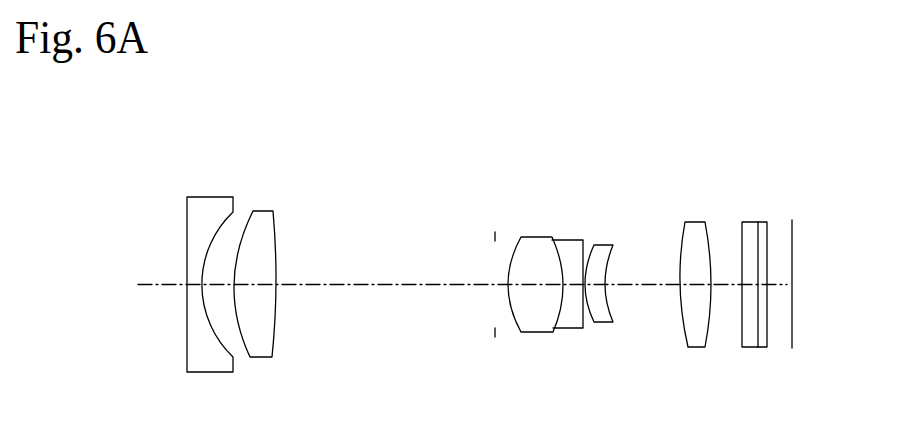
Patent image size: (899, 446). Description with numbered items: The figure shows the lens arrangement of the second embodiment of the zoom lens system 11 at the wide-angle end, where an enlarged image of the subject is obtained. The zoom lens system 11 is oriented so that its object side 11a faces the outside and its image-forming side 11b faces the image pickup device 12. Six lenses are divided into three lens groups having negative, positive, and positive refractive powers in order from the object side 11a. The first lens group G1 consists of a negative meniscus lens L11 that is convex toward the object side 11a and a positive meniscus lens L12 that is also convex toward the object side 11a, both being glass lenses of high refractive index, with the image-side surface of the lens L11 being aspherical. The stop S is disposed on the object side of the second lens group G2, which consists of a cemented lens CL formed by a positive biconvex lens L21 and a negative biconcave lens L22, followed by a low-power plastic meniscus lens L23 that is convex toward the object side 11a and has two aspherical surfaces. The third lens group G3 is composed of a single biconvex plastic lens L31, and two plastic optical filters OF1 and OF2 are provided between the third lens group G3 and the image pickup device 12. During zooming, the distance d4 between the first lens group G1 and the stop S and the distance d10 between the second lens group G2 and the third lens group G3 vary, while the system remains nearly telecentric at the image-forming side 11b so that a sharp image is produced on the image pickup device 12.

The zoom lens system 11 is at (663, 124).
The object side 11a is at (112, 229).
The image-forming side 11b is at (725, 219).
The image pickup device 12 is at (792, 255).
The first lens group G1 is at (240, 287).
The second lens group G2 is at (581, 285).
The third lens group G3 is at (703, 289).
The negative meniscus lens L11 is at (215, 205).
The positive meniscus lens L12 is at (257, 218).
The positive biconvex lens L21 is at (535, 240).
The negative biconcave lens L22 is at (578, 247).
The low-power meniscus lens L23 is at (608, 245).
The biconvex plastic lens L31 is at (695, 222).
The cemented lens CL is at (550, 228).
The stop S is at (493, 237).
The distance between first lens group and stop d4 is at (410, 285).
The distance between second lens group and third lens group d10 is at (642, 285).
The optical filter OF1 is at (750, 333).
The optical filter OF2 is at (760, 340).